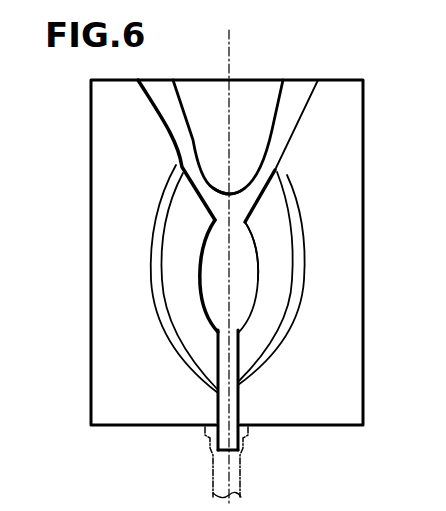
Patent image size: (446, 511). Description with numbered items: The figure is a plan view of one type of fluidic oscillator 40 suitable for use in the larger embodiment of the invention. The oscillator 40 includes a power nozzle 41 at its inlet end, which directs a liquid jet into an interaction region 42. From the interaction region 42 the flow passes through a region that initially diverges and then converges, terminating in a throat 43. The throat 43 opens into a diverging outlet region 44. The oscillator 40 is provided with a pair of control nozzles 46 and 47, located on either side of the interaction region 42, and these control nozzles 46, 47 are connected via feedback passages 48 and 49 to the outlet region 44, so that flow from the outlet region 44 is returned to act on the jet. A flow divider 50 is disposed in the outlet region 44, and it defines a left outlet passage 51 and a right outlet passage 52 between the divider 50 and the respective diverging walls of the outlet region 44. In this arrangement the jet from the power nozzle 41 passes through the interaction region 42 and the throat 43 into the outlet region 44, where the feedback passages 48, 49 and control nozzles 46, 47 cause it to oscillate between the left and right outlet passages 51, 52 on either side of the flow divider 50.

The oscillator 40 is at (376, 238).
The power nozzle 41 is at (242, 412).
The interaction region 42 is at (229, 276).
The throat 43 is at (237, 233).
The diverging outlet region 44 is at (230, 211).
The control nozzle 46 is at (216, 394).
The control nozzle 47 is at (240, 388).
The feedback passage 48 is at (153, 280).
The feedback passage 49 is at (292, 305).
The flow divider 50 is at (228, 137).
The left outlet passage 51 is at (163, 101).
The right outlet passage 52 is at (288, 104).